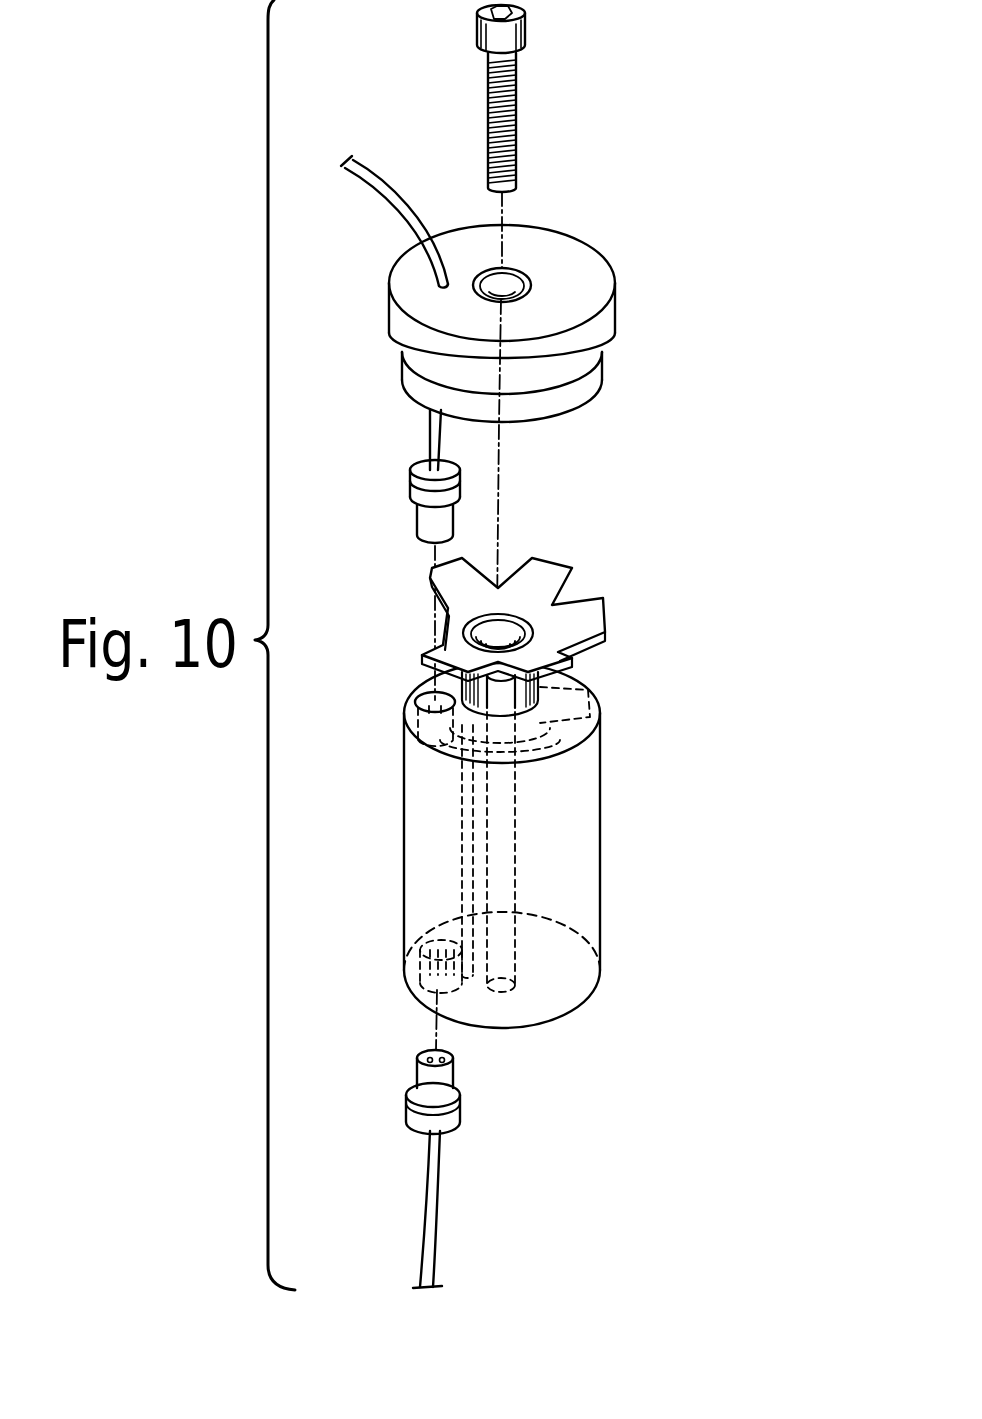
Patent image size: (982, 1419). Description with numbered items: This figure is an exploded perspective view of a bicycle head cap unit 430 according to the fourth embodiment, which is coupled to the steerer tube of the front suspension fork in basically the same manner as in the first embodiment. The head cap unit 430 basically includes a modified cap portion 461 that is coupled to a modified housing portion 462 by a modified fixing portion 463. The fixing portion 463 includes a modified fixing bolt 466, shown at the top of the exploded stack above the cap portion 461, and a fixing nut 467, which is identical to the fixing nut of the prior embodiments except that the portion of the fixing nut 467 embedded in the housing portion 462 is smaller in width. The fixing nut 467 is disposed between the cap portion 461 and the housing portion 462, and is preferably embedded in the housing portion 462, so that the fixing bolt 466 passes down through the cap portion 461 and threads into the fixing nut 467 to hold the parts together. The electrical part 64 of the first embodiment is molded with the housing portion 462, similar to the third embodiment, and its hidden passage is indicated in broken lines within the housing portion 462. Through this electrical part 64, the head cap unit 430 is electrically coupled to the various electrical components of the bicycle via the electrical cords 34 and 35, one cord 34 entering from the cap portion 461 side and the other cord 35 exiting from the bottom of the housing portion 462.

The electrical cord 34 is at (408, 485).
The electrical cord 35 is at (460, 1103).
The electrical part 64 is at (462, 825).
The head cap unit 430 is at (594, 221).
The cap portion 461 is at (615, 322).
The housing portion 462 is at (600, 853).
The fixing portion 463 is at (600, 566).
The fixing bolt 466 is at (516, 98).
The fixing nut 467 is at (606, 615).